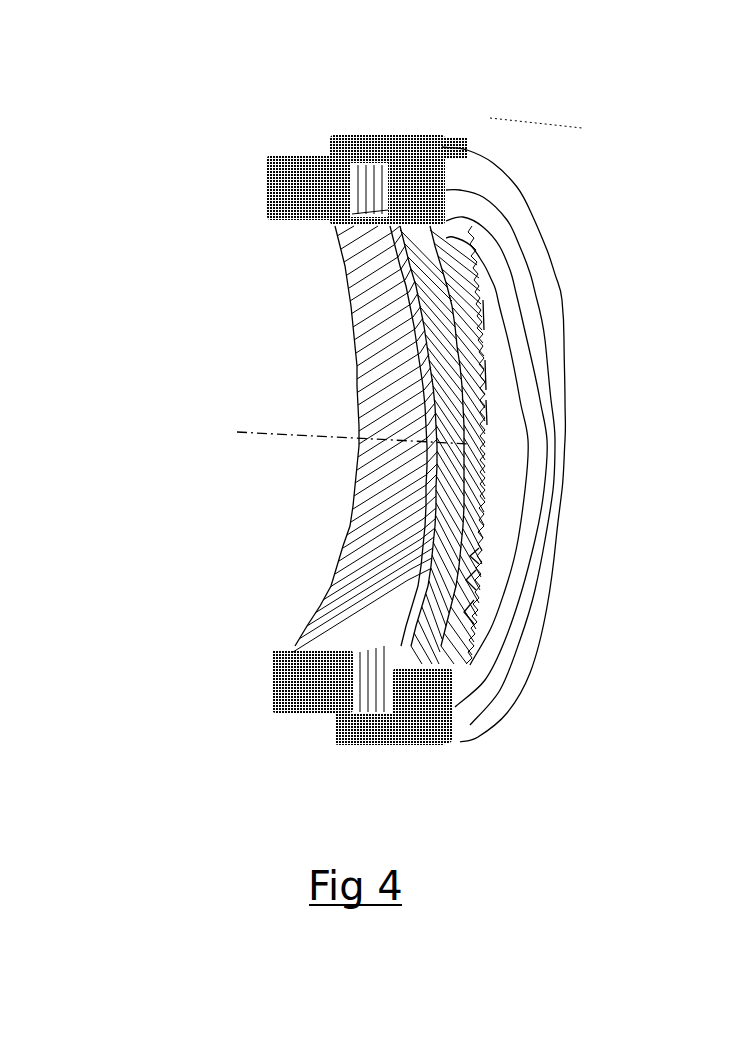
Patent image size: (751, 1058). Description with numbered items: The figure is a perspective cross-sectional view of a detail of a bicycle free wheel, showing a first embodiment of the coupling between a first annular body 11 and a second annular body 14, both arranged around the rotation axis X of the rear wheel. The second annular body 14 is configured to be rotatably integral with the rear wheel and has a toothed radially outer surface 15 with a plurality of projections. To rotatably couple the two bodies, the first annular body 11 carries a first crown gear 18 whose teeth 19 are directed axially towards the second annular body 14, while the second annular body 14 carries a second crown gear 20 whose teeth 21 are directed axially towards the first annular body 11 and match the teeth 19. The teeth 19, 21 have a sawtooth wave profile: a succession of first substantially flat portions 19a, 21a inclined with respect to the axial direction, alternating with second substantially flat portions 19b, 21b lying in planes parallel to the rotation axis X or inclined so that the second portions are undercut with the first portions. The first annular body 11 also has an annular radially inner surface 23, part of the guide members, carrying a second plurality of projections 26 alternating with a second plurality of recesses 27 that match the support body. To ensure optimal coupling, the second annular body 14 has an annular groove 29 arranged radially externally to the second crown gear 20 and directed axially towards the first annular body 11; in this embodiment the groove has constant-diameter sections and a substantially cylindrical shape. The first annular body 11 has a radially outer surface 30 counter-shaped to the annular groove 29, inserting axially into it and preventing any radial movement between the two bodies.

The first annular body 11 is at (243, 172).
The second annular body 14 is at (540, 172).
The toothed radially outer surface 15 is at (427, 142).
The radially outer surface 30 is at (305, 152).
The first crown gear 18 is at (370, 676).
The annular groove 29 is at (375, 713).
The teeth 19 is at (450, 469).
The first substantially flat portions 19a is at (415, 617).
The second substantially flat portions 19b is at (433, 577).
The second crown gear 20 is at (470, 557).
The teeth 21 is at (480, 320).
The first substantially flat portions 21a is at (485, 377).
The second substantially flat portions 21b is at (485, 417).
The radially inner surface 23 is at (379, 350).
The second plurality of projections 26 is at (383, 312).
The second plurality of recesses 27 is at (348, 272).
The rotation axis X is at (245, 433).